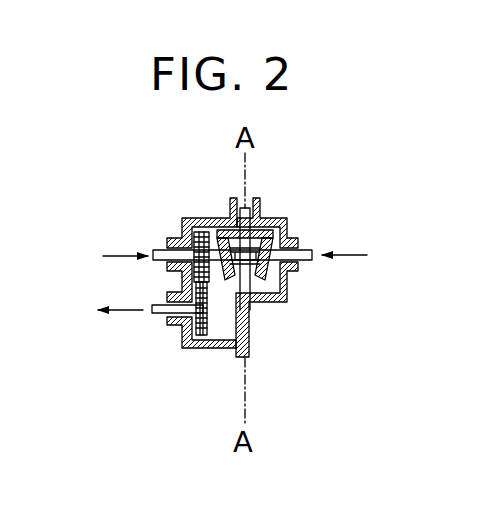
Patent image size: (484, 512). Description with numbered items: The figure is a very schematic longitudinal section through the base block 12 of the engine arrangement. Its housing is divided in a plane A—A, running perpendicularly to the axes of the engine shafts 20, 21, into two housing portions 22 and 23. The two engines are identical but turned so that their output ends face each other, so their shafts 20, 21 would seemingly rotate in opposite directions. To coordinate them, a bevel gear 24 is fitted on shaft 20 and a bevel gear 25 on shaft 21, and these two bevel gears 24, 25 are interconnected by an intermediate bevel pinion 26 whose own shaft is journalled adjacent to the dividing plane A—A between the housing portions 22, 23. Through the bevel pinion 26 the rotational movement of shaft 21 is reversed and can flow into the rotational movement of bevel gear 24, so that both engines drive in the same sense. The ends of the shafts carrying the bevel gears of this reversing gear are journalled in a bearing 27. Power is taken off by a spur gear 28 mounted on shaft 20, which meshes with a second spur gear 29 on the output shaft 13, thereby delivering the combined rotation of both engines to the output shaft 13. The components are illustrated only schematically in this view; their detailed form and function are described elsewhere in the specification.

The base block 12 is at (181, 343).
The output shaft 13 is at (160, 313).
The shaft 20 is at (165, 244).
The shaft 21 is at (310, 253).
The housing portion 22 is at (187, 243).
The housing portion 23 is at (250, 322).
The bevel gear 24 is at (212, 230).
The bevel gear 25 is at (285, 245).
The intermediate bevel pinion 26 is at (272, 231).
The bearing 27 is at (260, 278).
The spur gear 28 is at (183, 285).
The second spur gear 29 is at (208, 343).